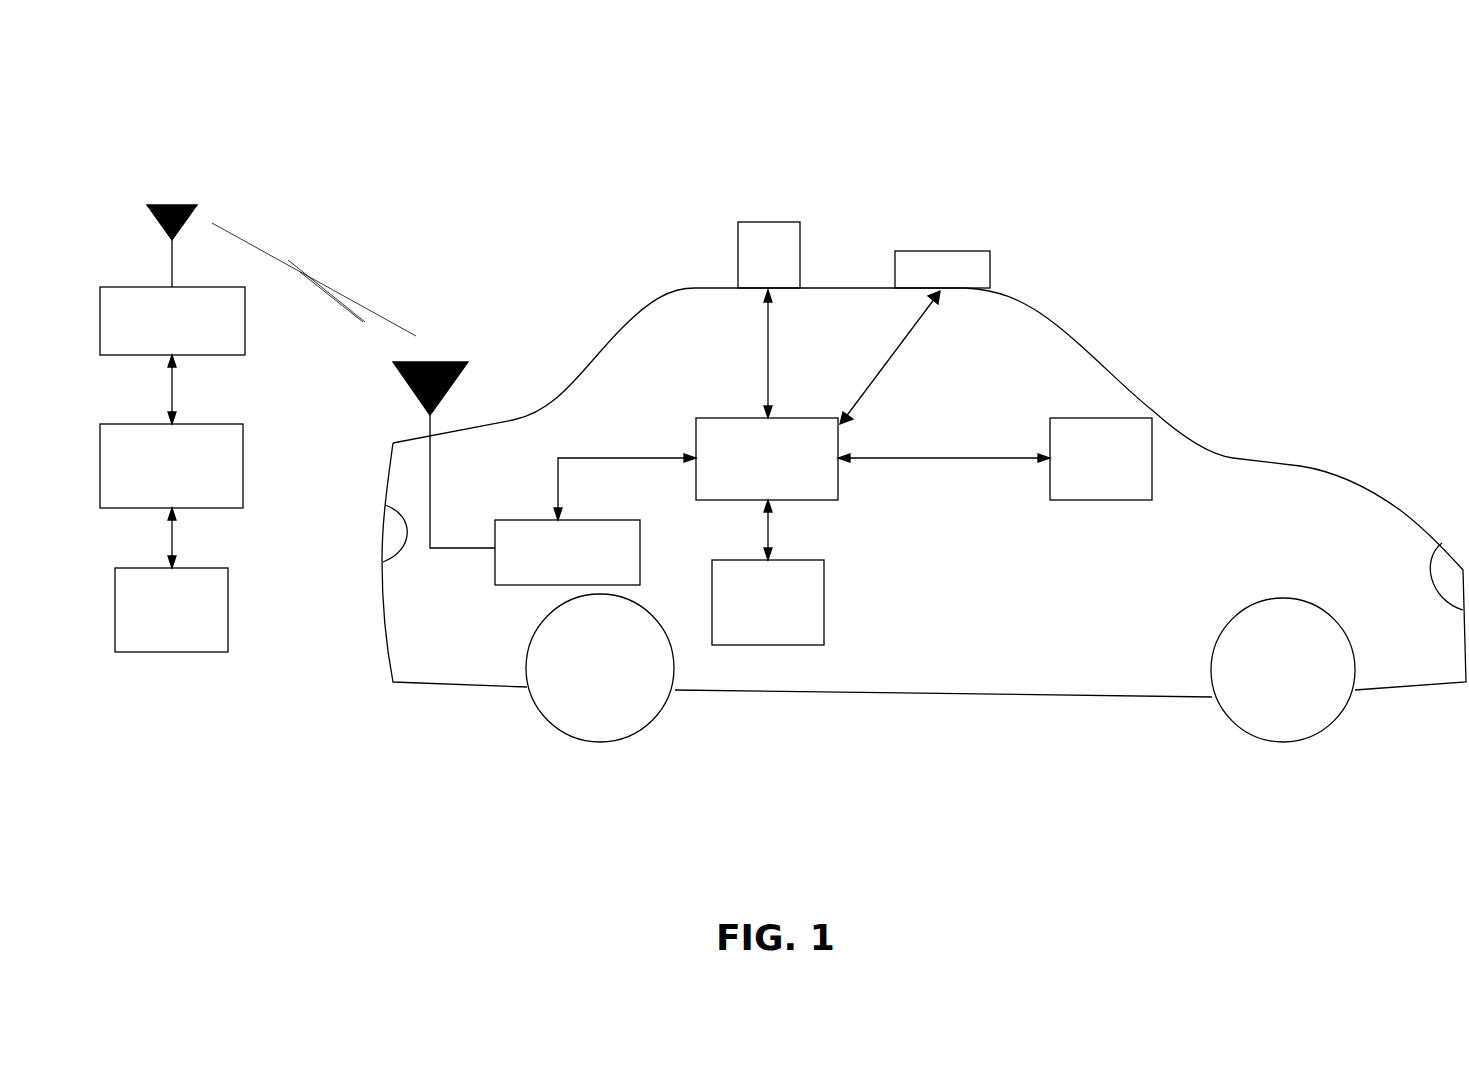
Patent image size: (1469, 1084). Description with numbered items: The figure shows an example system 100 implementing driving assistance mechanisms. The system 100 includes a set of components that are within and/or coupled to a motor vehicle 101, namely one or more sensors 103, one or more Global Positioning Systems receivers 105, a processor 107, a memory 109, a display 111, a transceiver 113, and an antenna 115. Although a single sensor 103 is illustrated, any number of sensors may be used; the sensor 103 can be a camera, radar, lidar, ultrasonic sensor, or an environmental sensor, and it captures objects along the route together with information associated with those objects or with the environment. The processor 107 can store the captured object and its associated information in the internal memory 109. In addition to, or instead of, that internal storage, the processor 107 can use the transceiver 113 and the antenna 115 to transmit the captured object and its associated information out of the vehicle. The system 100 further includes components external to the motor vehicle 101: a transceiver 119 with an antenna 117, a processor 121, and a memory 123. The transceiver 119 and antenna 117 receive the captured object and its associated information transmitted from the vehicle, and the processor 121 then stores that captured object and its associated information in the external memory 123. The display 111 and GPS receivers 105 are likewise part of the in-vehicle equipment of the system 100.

The system 100 is at (1281, 96).
The motor vehicle 101 is at (1062, 332).
The sensor 103 is at (955, 256).
The Global Positioning Systems (GPS) receiver 105 is at (758, 228).
The processor 107 is at (767, 459).
The memory 109 is at (768, 602).
The display 111 is at (1101, 459).
The transceiver 113 is at (567, 552).
The antenna 115 is at (436, 360).
The antenna 117 is at (177, 204).
The transceiver 119 is at (172, 321).
The processor 121 is at (171, 466).
The memory 123 is at (171, 610).